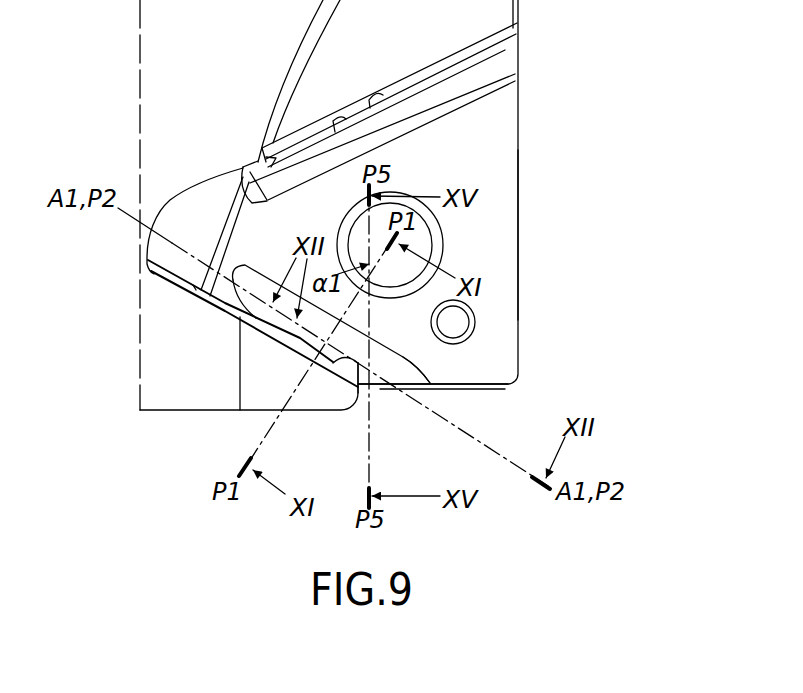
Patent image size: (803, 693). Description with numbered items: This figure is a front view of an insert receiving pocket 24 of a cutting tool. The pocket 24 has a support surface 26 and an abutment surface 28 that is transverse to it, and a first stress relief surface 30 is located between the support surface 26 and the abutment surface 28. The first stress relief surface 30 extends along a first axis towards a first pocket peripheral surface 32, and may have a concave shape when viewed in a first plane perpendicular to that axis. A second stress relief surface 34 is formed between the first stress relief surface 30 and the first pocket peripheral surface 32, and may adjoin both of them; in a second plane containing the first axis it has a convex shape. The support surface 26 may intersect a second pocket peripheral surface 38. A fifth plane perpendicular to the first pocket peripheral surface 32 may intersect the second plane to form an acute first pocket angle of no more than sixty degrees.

The pocket 24 is at (409, 177).
The support surface 26 is at (490, 316).
The abutment surface 28 is at (273, 332).
The first stress relief surface 30 is at (400, 366).
The first pocket peripheral surface 32 is at (468, 389).
The second stress relief surface 34 is at (374, 384).
The second pocket peripheral surface 38 is at (521, 230).